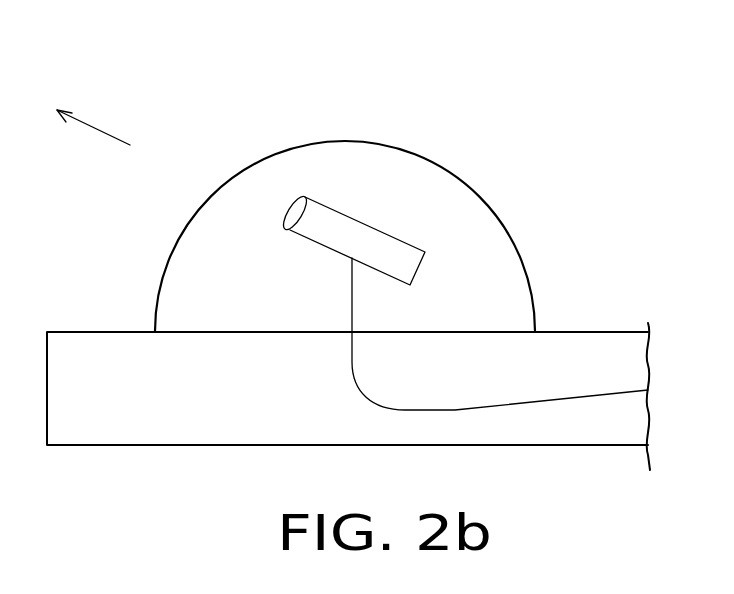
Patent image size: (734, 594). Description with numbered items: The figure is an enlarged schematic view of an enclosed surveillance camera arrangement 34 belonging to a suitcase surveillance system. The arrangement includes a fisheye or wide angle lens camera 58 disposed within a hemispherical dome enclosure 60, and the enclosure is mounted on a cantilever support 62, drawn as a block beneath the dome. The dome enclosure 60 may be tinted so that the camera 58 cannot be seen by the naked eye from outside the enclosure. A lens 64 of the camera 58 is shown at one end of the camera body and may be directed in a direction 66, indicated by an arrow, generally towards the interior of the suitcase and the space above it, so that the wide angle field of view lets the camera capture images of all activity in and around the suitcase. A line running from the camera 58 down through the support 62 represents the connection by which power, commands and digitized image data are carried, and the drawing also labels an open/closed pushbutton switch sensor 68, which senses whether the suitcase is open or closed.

The enclosed surveillance camera arrangement 34 is at (582, 115).
The fisheye or wide angle lens camera 58 is at (400, 255).
The hemispherical dome enclosure 60 is at (168, 263).
The cantilever support 62 is at (167, 408).
The lens 64 is at (297, 197).
The direction 66 is at (100, 130).
The open/closed pushbutton switch sensor 68 is at (520, 402).